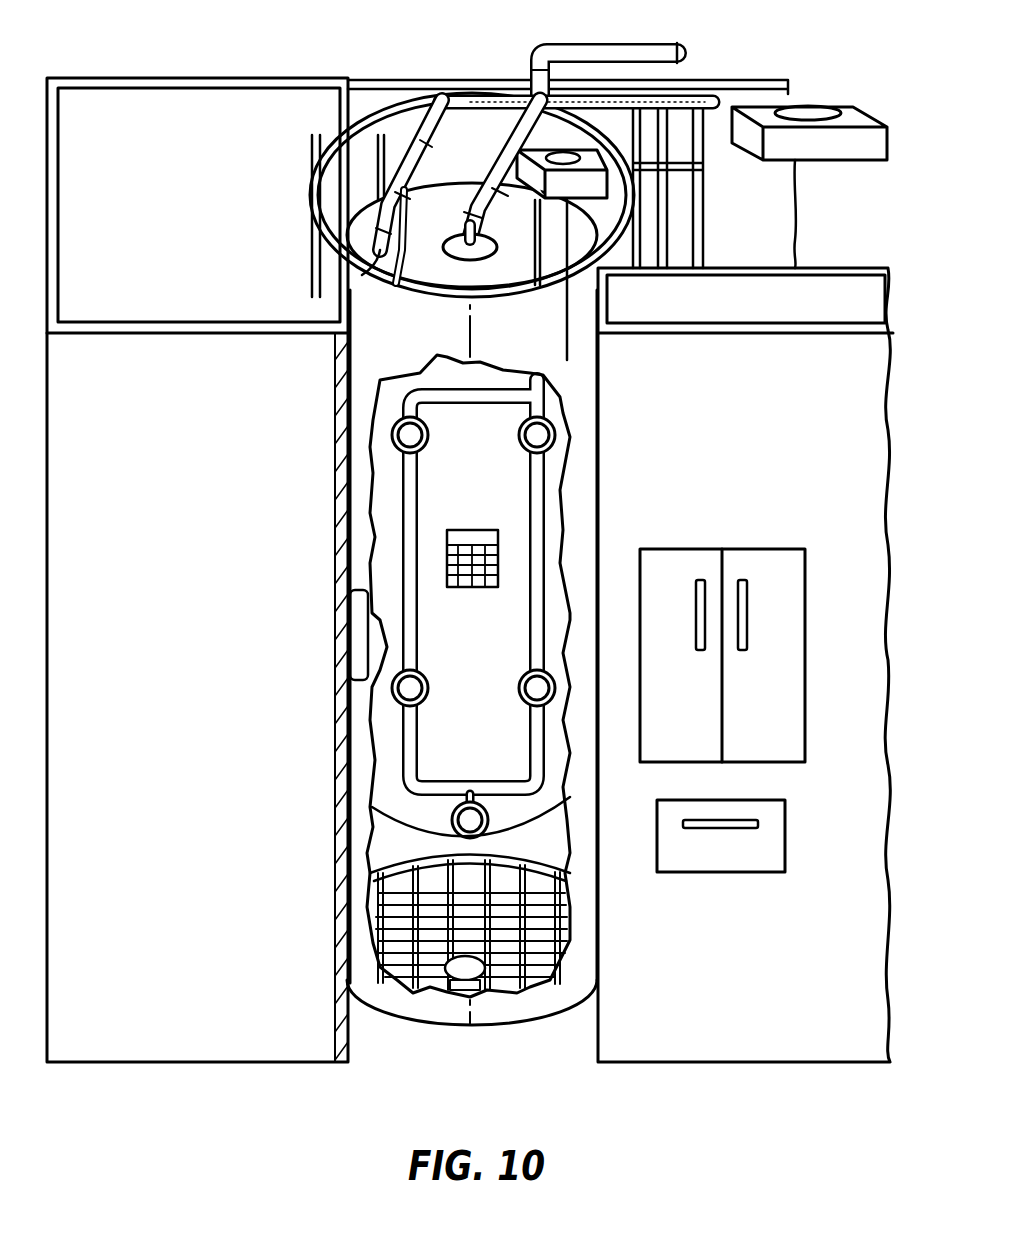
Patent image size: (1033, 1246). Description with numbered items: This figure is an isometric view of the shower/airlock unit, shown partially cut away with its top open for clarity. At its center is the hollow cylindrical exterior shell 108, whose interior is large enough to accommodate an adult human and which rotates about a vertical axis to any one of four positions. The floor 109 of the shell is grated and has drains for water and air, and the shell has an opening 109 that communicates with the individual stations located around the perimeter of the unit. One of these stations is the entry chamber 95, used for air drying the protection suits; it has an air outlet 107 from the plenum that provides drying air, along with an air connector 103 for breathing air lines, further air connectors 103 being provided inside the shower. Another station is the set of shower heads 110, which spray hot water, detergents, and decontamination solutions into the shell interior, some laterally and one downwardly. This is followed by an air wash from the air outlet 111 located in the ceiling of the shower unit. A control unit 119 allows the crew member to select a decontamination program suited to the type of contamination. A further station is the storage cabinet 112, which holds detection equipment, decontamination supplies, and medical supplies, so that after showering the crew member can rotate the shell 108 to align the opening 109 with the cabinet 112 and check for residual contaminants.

The entry chamber 95 is at (790, 238).
The air connector 103 is at (375, 222).
The air outlet 107 is at (822, 100).
The hollow cylindrical exterior shell 108 is at (367, 297).
The opening 109 is at (393, 812).
The shower heads 110 is at (468, 212).
The air outlet 111 is at (567, 160).
The storage cabinet 112 is at (158, 102).
The control unit 119 is at (447, 537).